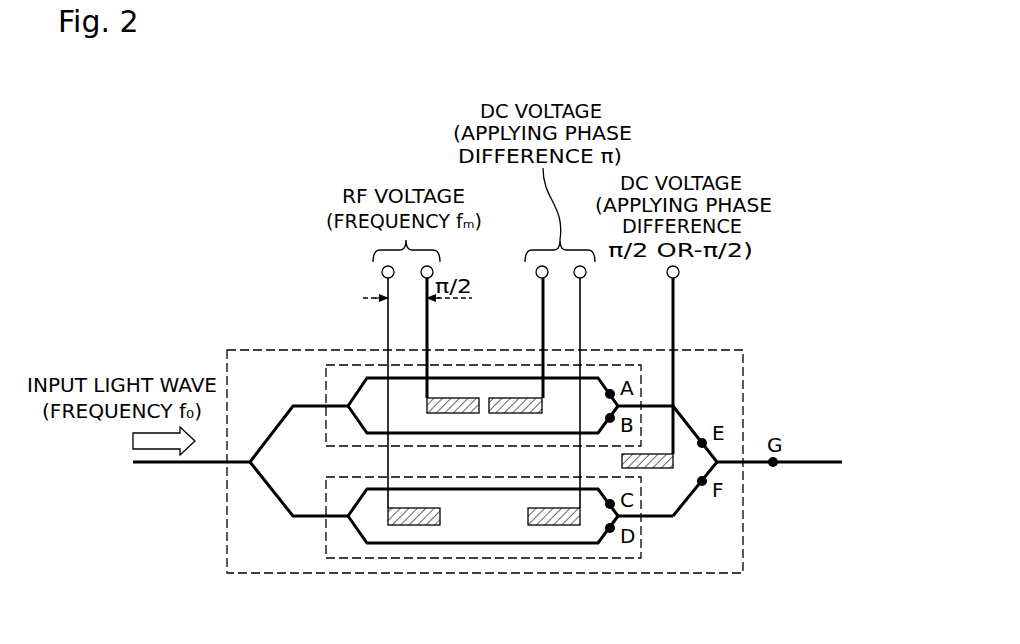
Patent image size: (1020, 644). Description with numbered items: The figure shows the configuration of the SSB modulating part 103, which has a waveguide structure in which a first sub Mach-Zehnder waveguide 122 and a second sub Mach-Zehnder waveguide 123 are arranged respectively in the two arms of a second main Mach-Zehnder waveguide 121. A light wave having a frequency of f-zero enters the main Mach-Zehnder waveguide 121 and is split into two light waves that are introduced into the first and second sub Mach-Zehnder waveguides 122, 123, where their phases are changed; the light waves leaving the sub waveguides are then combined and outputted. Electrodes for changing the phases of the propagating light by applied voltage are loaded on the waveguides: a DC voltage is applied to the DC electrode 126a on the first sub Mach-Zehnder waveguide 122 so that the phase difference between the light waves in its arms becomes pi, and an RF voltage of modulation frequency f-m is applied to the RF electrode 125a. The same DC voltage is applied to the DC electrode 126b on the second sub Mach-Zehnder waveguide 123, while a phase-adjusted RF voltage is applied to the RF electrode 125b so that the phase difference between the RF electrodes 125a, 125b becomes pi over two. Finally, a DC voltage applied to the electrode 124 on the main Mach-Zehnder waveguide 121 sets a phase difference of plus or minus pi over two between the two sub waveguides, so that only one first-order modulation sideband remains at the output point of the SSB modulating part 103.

The SSB modulating part 103 is at (803, 245).
The second main Mach-Zehnder waveguide 121 is at (743, 545).
The first sub Mach-Zehnder waveguide 122 is at (326, 378).
The second sub Mach-Zehnder waveguide 123 is at (326, 544).
The electrode 124 is at (663, 470).
The RF electrode 125a is at (450, 398).
The RF electrode 125b is at (415, 525).
The DC electrode 126a is at (511, 398).
The DC electrode 126b is at (553, 525).